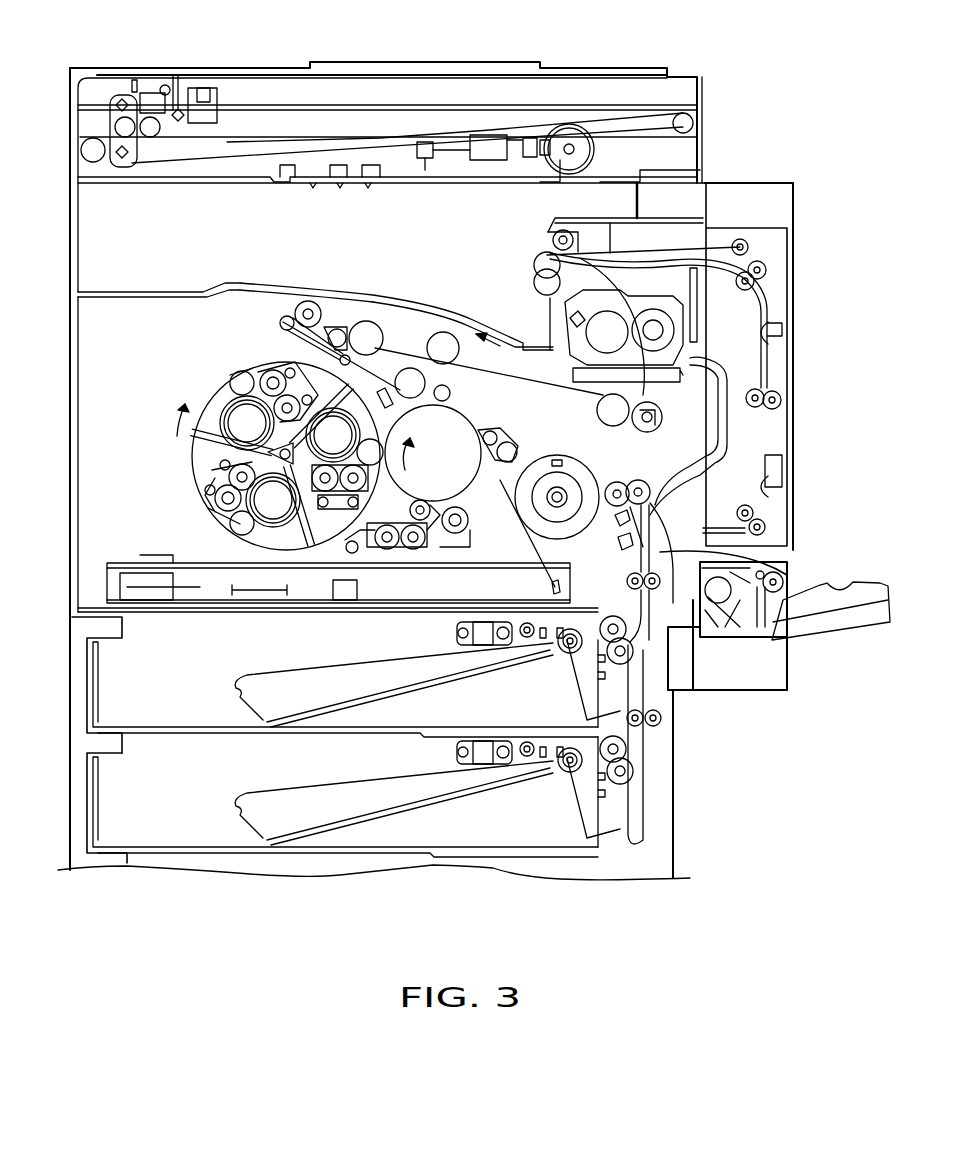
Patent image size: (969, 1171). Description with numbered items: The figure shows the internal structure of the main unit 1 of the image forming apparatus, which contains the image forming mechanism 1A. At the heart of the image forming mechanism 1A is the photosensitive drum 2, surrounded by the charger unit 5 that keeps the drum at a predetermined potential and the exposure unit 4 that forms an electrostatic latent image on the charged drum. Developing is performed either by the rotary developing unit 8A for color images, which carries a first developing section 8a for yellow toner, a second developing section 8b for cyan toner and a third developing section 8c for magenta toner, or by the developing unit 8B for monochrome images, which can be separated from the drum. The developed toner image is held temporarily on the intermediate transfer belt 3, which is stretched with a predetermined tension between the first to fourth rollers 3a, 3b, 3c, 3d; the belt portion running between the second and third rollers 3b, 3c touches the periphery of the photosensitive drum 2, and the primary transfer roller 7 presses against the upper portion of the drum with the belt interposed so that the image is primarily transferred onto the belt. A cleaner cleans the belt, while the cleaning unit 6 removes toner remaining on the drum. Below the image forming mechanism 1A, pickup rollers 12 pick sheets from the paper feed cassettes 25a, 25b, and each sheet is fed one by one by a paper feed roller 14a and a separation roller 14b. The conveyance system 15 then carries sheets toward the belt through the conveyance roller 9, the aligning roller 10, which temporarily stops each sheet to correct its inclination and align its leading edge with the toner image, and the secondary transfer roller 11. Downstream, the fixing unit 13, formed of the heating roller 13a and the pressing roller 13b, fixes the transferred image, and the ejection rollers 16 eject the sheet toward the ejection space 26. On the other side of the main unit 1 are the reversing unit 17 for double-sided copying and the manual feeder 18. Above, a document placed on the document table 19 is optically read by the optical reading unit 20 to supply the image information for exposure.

The main unit 1 is at (68, 522).
The image forming mechanism 1A is at (193, 334).
The photosensitive drum 2 is at (455, 420).
The intermediate transfer belt 3 is at (419, 328).
The first roller 3a is at (370, 321).
The second roller 3b is at (386, 297).
The third roller 3c is at (598, 412).
The fourth roller 3d is at (446, 333).
The exposure unit 4 is at (176, 560).
The charger unit 5 is at (512, 520).
The cleaning unit 6 is at (517, 440).
The primary transfer roller 7 is at (450, 392).
The rotary developing unit 8A is at (208, 392).
The developing unit 8B is at (448, 542).
The first developing section 8a is at (318, 520).
The second developing section 8b is at (198, 458).
The third developing section 8c is at (265, 370).
The conveyance roller 9 is at (656, 542).
The aligning roller 10 is at (693, 484).
The secondary transfer roller 11 is at (642, 425).
The pickup roller 12 is at (560, 643).
The fixing unit 13 is at (625, 280).
The heating roller 13a is at (592, 350).
The pressing roller 13b is at (688, 336).
The paper feed roller 14a is at (600, 637).
The separation roller 14b is at (655, 655).
The conveyance system 15 is at (308, 306).
The ejection rollers 16 is at (540, 262).
The reversing unit 17 is at (800, 222).
The manual feeder 18 is at (843, 583).
The document table 19 is at (283, 66).
The optical reading unit 20 is at (185, 86).
The paper feed cassette 25a is at (107, 650).
The paper feed cassette 25b is at (120, 780).
The ejection space 26 is at (306, 253).